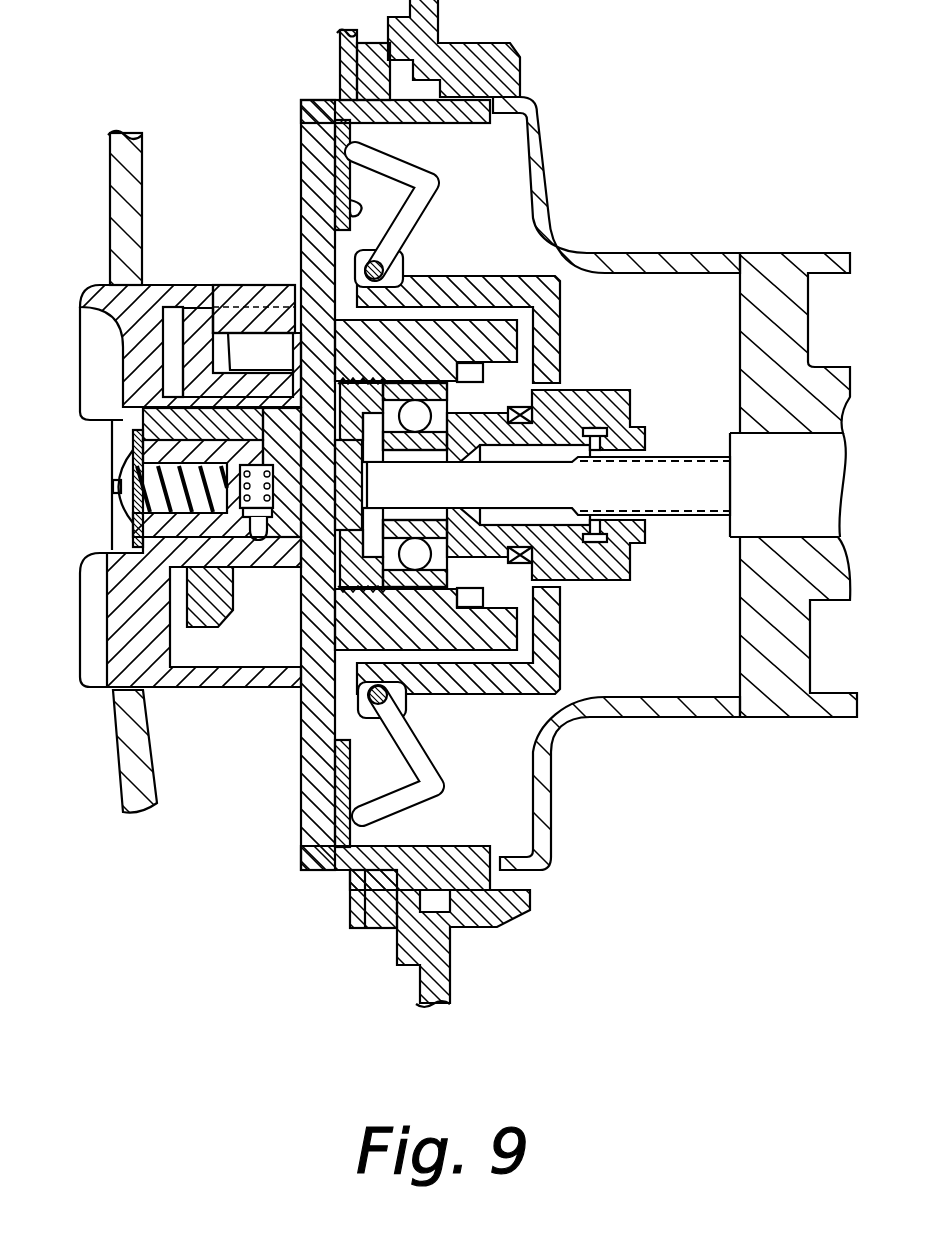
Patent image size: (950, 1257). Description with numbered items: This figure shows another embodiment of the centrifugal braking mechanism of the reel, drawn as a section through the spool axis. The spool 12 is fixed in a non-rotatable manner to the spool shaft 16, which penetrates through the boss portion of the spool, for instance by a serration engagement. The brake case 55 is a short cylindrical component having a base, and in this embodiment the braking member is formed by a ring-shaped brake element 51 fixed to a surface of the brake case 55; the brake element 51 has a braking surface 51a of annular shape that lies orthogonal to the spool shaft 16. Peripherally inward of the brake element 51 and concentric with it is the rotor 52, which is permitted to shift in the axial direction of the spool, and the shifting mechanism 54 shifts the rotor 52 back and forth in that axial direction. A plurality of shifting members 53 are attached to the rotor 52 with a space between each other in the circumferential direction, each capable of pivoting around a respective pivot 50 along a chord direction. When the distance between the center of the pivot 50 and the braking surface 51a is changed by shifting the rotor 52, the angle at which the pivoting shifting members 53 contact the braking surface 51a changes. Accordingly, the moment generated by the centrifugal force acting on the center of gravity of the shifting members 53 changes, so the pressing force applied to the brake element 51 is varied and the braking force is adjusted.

The spool 12 is at (731, 257).
The spool shaft 16 is at (677, 478).
The pivot 50 is at (388, 268).
The brake element 51 is at (325, 163).
The braking surface 51a is at (334, 214).
The rotor 52 is at (560, 338).
The shifting members 53 is at (426, 178).
The shifting mechanism 54 is at (249, 287).
The brake case 55 is at (312, 127).